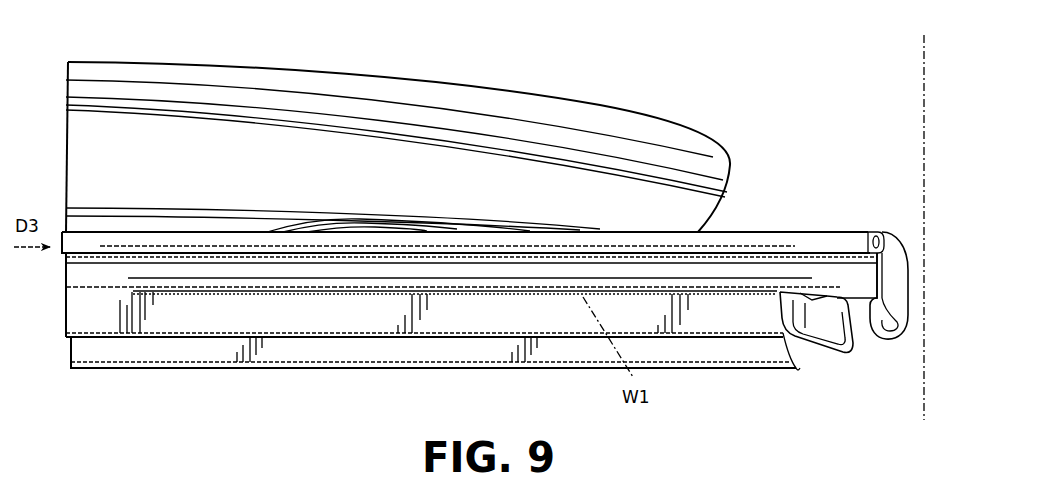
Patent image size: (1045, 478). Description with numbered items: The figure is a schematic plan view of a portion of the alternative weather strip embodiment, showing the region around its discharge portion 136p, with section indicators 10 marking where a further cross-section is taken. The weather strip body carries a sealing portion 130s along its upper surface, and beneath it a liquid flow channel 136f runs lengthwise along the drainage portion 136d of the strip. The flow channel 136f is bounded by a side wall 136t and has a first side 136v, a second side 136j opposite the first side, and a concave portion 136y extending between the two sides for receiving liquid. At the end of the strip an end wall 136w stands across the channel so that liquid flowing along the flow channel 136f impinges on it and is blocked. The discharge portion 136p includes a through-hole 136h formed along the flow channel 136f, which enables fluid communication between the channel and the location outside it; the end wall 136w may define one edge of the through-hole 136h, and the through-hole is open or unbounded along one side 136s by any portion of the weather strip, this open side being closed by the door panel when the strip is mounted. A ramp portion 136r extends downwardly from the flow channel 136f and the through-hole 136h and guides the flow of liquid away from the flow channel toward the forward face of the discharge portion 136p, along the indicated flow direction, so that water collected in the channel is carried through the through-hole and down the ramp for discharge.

The hinge assembly 10 is at (924, 35).
The housing upper surface 130s is at (233, 126).
The flow channel 136f is at (222, 281).
The side wall 136t is at (648, 240).
The vertical wall 136v is at (558, 274).
The side wall surface 136y is at (135, 286).
The middle rail 136j is at (217, 309).
The bottom rail 136d is at (117, 341).
The ramp portion 136r is at (810, 318).
The open side of through-hole 136s is at (823, 316).
The through-hole 136h is at (843, 315).
The end wall 136w is at (905, 240).
The discharge portion 136p is at (868, 344).